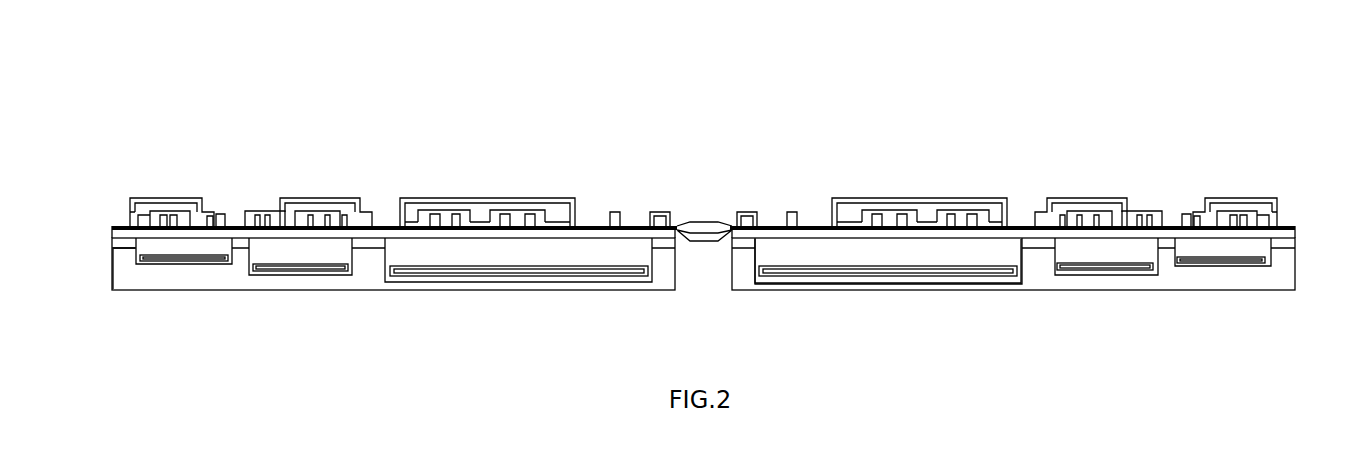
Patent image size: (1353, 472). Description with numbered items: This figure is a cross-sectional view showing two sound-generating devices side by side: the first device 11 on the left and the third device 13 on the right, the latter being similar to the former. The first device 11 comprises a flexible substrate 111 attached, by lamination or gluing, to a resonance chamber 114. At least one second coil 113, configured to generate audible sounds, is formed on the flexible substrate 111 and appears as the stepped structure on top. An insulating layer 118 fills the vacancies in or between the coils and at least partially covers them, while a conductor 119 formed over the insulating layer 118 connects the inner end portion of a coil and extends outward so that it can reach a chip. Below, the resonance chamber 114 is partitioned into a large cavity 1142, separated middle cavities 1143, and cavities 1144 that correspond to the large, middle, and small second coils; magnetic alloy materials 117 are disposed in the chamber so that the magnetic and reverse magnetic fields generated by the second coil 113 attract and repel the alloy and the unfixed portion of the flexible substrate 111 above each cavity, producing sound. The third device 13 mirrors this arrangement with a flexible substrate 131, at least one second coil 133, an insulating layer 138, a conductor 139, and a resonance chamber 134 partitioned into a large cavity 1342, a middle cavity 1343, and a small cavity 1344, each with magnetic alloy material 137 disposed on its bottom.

The first device 11 is at (237, 107).
The third device 13 is at (1170, 107).
The flexible substrate 111 is at (122, 228).
The second coil 113 is at (145, 218).
The resonance chamber 114 is at (130, 282).
The magnetic alloy materials 117 is at (124, 254).
The insulating layer 118 is at (212, 212).
The conductor 119 is at (168, 208).
The large cavity 1142 is at (520, 250).
The middle cavity 1143 is at (305, 255).
The cavity 1144 is at (187, 250).
The flexible substrate 131 is at (1283, 232).
The second coil 133 is at (1263, 212).
The resonance chamber 134 is at (1283, 273).
The magnetic alloy materials 137 is at (980, 248).
The insulating layer 138 is at (1145, 212).
The conductor 139 is at (1105, 208).
The large cavity 1342 is at (892, 252).
The middle cavity 1343 is at (1105, 255).
The small cavity 1344 is at (1221, 250).